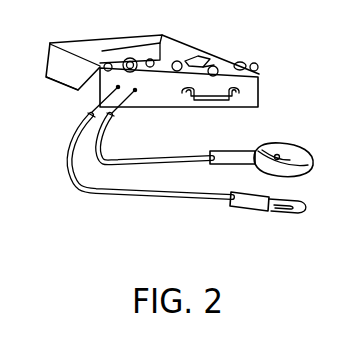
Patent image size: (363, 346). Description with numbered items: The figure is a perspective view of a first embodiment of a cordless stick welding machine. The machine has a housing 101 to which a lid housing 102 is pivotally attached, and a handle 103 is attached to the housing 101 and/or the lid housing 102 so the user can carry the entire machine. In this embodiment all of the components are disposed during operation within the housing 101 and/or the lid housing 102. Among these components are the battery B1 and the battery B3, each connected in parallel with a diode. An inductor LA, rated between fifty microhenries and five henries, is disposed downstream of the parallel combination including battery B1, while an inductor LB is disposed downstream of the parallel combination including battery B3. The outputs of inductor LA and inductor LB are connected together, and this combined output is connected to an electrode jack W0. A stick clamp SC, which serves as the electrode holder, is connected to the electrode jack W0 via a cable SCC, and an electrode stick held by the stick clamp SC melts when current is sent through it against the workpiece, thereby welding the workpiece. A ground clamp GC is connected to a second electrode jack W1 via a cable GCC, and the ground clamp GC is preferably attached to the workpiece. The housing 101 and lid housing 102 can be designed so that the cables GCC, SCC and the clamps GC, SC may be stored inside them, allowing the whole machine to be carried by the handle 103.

The housing 101 is at (259, 73).
The lid housing 102 is at (183, 44).
The handle 103 is at (232, 101).
The battery B1 is at (147, 53).
The battery B3 is at (217, 75).
The inductor LB is at (203, 63).
The inductor LA is at (78, 89).
The electrode jack W0 is at (136, 92).
The electrode jack W1 is at (115, 89).
The cable SCC is at (163, 193).
The stick clamp SC is at (250, 212).
The cable GCC is at (178, 156).
The ground clamp GC is at (297, 152).